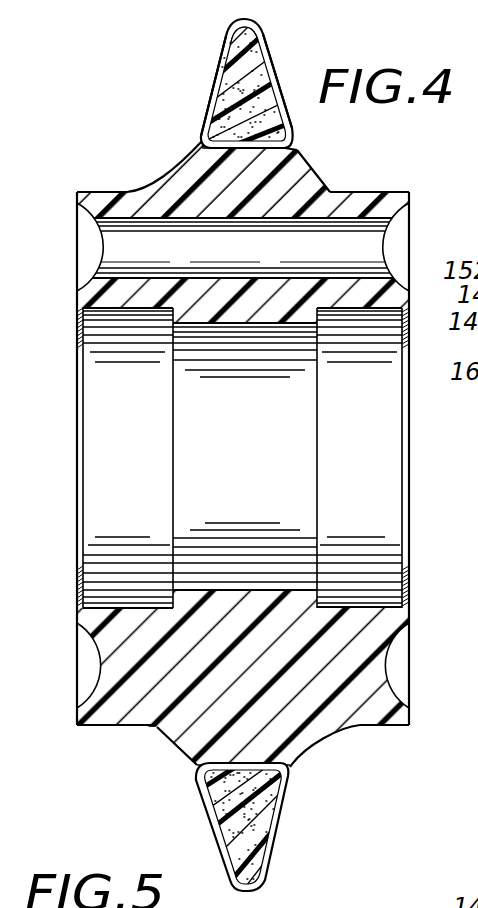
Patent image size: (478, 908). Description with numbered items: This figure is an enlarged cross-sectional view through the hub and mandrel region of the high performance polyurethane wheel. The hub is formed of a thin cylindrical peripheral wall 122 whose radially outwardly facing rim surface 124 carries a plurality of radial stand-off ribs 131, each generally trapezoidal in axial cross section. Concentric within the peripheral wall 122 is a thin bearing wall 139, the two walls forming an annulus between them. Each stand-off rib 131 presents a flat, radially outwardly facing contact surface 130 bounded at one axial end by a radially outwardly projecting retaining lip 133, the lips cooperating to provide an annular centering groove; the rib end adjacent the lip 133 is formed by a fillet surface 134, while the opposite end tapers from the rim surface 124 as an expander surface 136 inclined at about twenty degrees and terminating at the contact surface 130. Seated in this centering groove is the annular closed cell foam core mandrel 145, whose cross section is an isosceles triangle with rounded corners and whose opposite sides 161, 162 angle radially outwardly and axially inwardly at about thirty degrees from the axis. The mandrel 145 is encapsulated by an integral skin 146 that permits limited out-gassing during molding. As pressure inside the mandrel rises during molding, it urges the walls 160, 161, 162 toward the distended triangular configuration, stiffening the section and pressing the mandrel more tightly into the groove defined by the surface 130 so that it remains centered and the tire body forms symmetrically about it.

The cylindrical peripheral wall 122 is at (77, 199).
The rim surface 124 is at (368, 192).
The contact surface 130 is at (297, 152).
The stand-off rib 131 is at (150, 740).
The retaining lip 133 is at (203, 141).
The fillet surface 134 is at (172, 171).
The expander surface 136 is at (313, 172).
The bearing wall 139 is at (78, 314).
The foam core mandrel 145 is at (267, 19).
The integral skin 146 is at (262, 41).
The wall 160 is at (240, 152).
The side 161 is at (214, 78).
The side 162 is at (280, 78).